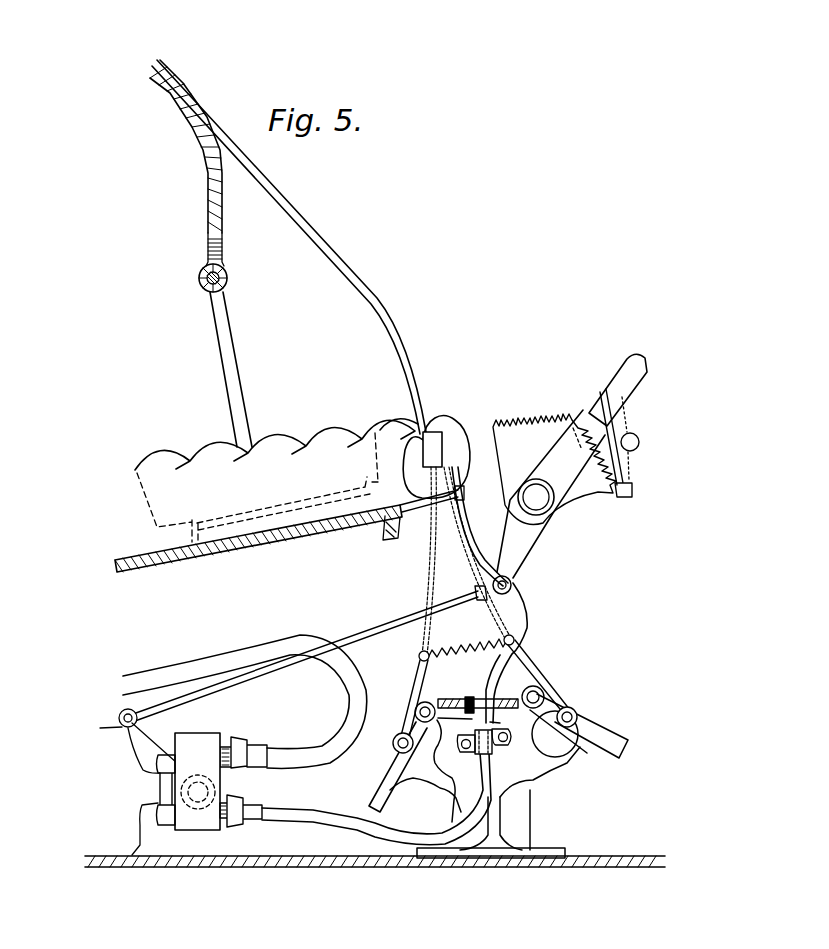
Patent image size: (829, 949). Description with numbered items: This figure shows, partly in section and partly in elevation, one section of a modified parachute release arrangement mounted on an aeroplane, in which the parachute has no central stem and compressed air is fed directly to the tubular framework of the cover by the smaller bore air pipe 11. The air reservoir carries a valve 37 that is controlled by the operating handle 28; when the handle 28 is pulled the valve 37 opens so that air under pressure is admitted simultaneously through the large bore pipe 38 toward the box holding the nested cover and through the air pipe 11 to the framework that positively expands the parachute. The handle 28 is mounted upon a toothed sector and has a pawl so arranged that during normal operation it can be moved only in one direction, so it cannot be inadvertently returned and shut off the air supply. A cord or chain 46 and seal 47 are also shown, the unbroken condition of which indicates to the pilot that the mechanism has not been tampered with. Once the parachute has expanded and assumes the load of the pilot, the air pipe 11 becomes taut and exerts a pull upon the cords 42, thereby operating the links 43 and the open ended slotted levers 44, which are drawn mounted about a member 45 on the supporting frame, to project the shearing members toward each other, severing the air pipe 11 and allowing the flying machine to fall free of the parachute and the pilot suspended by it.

The air pipe 11 is at (413, 355).
The operating handle 28 is at (633, 363).
The valve 37 is at (192, 828).
The large bore pipe 38 is at (300, 752).
The cords 42 is at (506, 637).
The links 43 is at (413, 672).
The open ended slotted levers 44 is at (380, 790).
The bar 45 is at (452, 702).
The cord or chain 46 is at (628, 420).
The seal 47 is at (639, 443).